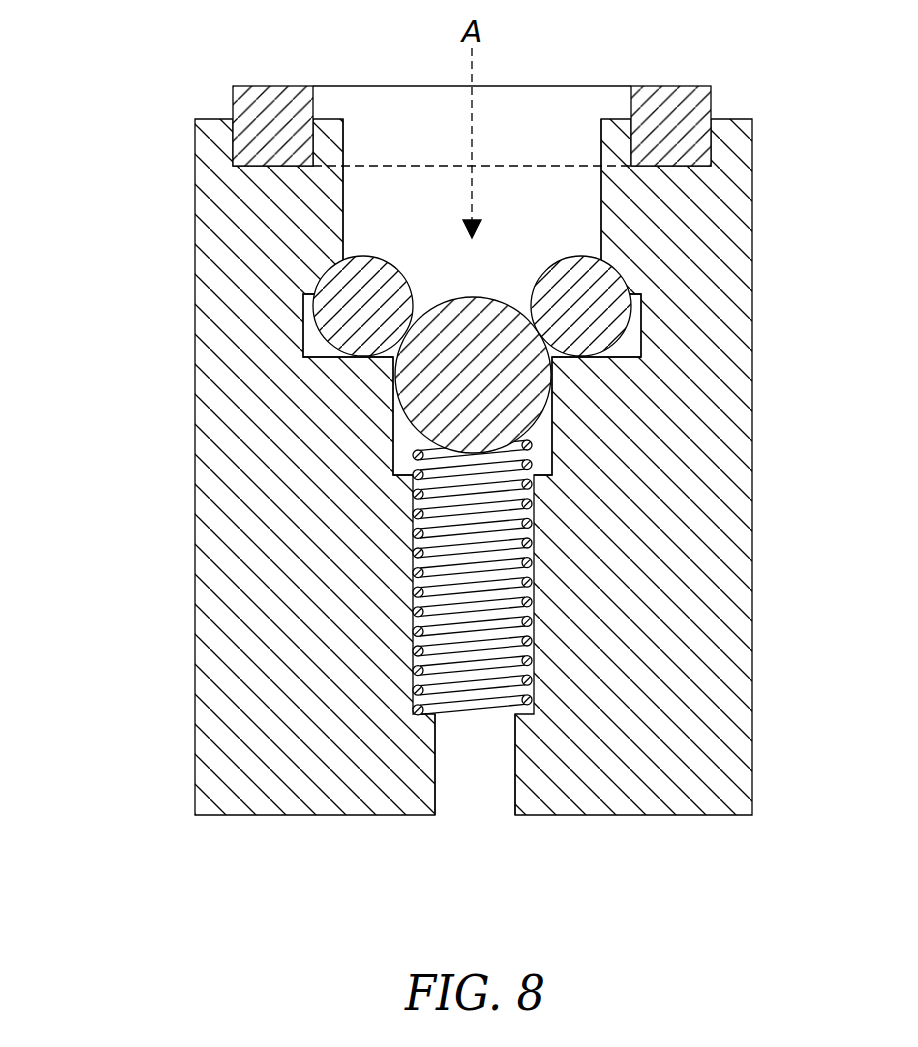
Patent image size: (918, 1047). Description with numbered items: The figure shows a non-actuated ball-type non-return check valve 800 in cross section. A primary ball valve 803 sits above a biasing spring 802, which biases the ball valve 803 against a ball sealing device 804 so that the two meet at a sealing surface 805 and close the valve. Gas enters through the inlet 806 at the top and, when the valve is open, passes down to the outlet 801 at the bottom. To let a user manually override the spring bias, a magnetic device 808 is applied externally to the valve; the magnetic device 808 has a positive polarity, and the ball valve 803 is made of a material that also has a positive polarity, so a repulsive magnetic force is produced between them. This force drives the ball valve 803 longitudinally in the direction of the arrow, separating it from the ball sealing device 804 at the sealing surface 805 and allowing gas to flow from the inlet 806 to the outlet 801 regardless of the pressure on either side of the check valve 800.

The check valve 800 is at (165, 532).
The outlet 801 is at (477, 775).
The biasing spring 802 is at (493, 610).
The primary ball valve 803 is at (497, 375).
The ball sealing device 804 is at (363, 297).
The sealing surface 805 is at (372, 363).
The inlet 806 is at (538, 180).
The magnetic device 808 is at (276, 94).